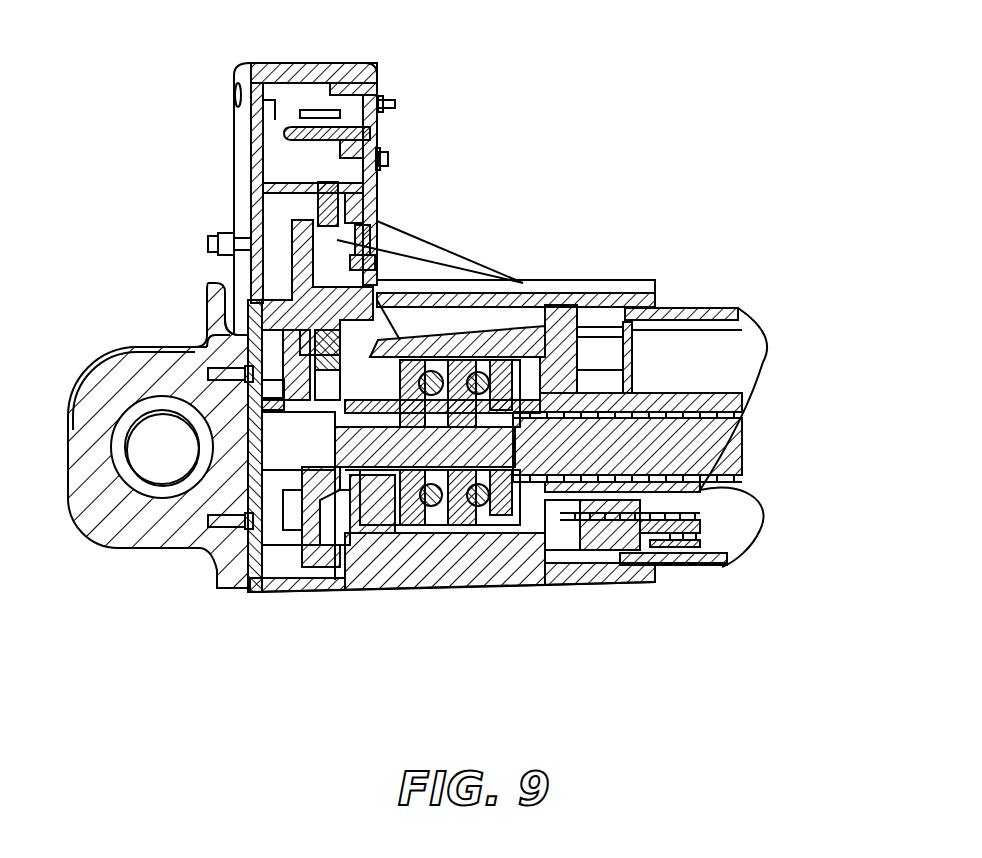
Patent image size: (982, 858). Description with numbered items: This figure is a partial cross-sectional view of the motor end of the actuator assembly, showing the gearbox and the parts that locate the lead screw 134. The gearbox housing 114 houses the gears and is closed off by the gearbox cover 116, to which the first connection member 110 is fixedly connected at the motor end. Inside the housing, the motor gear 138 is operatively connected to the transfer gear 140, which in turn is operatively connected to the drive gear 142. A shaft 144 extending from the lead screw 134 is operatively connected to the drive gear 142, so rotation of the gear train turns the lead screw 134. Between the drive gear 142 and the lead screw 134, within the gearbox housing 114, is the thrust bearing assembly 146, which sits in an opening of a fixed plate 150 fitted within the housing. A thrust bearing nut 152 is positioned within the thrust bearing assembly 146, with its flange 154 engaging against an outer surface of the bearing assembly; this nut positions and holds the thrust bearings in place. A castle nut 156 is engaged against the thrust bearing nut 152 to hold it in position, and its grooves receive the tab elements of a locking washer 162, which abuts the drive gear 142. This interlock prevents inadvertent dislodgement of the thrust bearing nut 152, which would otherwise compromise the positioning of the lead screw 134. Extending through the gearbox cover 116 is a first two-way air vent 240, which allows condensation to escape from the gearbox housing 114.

The first connection member 110 is at (120, 348).
The gearbox housing 114 is at (366, 62).
The gearbox cover 116 is at (272, 62).
The lead screw 134 is at (700, 390).
The motor gear 138 is at (340, 205).
The transfer gear 140 is at (377, 221).
The drive gear 142 is at (328, 567).
The shaft 144 is at (462, 413).
The thrust bearing assembly 146 is at (440, 360).
The fixed plate 150 is at (352, 350).
The thrust bearing nut 152 is at (428, 528).
The flange 154 is at (378, 555).
The castle nut 156 is at (356, 396).
The locking washer 162 is at (350, 388).
The first two-way air vent 240 is at (218, 240).